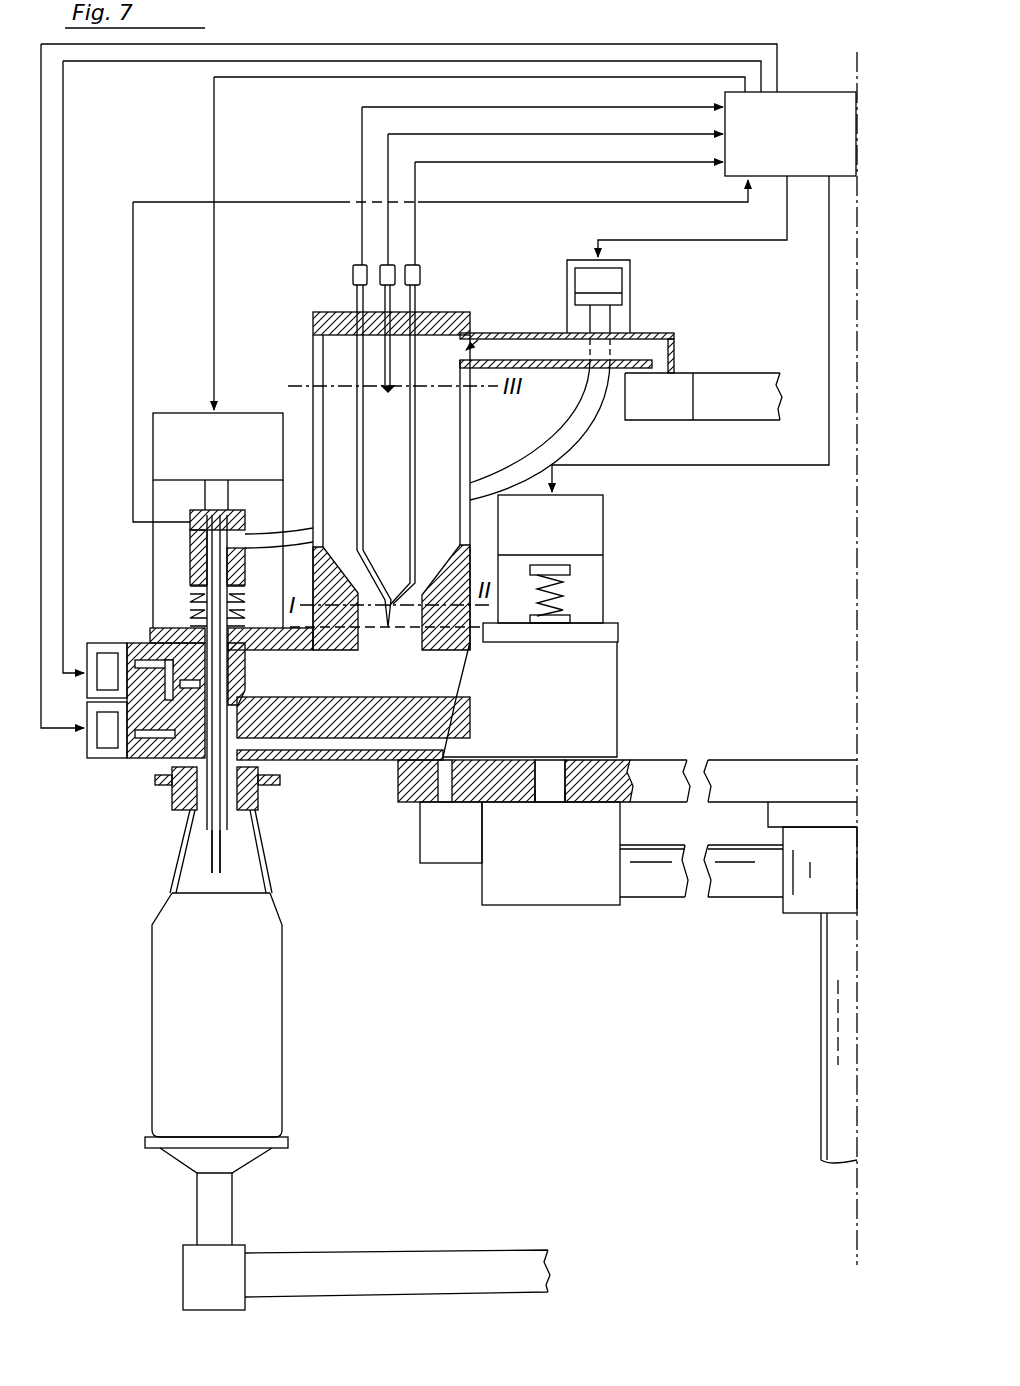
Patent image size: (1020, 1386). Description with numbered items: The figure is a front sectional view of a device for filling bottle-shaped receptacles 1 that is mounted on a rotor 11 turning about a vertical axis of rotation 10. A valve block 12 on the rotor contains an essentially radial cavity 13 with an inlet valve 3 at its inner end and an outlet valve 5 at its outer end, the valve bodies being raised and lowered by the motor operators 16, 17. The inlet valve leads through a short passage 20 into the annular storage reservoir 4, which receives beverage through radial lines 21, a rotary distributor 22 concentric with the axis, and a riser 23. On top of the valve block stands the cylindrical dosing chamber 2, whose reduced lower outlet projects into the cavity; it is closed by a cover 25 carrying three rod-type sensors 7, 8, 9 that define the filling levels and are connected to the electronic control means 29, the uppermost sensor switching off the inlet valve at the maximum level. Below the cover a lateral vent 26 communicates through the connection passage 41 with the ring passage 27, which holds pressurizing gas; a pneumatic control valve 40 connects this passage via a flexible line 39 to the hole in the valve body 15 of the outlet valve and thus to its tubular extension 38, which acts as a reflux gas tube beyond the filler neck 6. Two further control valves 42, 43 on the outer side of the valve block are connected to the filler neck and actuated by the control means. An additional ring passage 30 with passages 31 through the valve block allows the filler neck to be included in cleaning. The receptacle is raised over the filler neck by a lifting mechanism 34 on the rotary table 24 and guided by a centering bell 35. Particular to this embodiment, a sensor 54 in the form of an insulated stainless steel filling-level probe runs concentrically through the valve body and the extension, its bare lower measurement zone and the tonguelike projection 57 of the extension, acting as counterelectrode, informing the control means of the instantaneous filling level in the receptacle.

The receptacle 1 is at (180, 1065).
The dosing chamber 2 is at (313, 380).
The inlet valve 3 is at (582, 707).
The storage reservoir 4 is at (553, 877).
The outlet valve 5 is at (153, 632).
The filler neck 6 is at (280, 785).
The first sensor 7 is at (383, 300).
The second sensor 8 is at (358, 305).
The third sensor 9 is at (418, 300).
The axis of rotation 10 is at (857, 56).
The rotor 11 is at (790, 776).
The valve block 12 is at (570, 678).
The cavity 13 is at (400, 675).
The valve body 15 is at (245, 684).
The motor operator 16 is at (562, 536).
The motor operator 17 is at (228, 463).
The passage 20 is at (550, 790).
The radial line 21 is at (660, 880).
The rotary distributor 22 is at (815, 895).
The riser 23 is at (838, 1122).
The rotary table 24 is at (467, 1270).
The cover 25 is at (313, 322).
The lateral vent 26 is at (480, 330).
The ring passage 27 is at (668, 398).
The electronic control means 29 is at (806, 138).
The ring passage 30 is at (457, 842).
The passage 31 is at (430, 786).
The lifting mechanism 34 is at (218, 1212).
The centering bell 35 is at (172, 780).
The extension 38 is at (190, 816).
The flexible line 39 is at (580, 445).
The control valve 40 is at (600, 282).
The connection passage 41 is at (535, 348).
The control valve 42 is at (108, 672).
The control valve 43 is at (107, 737).
The sensor 54 is at (217, 862).
The tonguelike projection 57 is at (232, 847).